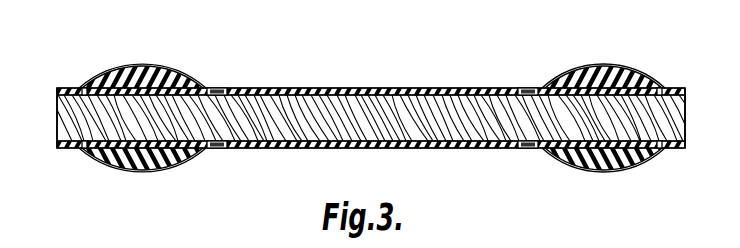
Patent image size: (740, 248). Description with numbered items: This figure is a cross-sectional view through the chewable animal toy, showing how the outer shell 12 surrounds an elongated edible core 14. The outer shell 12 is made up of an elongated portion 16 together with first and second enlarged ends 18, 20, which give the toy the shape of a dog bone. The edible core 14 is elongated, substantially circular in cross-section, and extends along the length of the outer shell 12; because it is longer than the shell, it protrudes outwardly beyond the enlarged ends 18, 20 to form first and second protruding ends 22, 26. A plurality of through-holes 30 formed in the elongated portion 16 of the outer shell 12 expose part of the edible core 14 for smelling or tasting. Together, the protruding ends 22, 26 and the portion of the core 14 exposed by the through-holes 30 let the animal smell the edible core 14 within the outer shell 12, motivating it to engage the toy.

The outer shell 12 is at (203, 153).
The edible core 14 is at (407, 98).
The elongated portion 16 is at (365, 88).
The first enlarged end 18 is at (148, 65).
The second enlarged end 20 is at (607, 65).
The first protruding end 22 is at (68, 97).
The second protruding end 26 is at (677, 97).
The through-holes 30 is at (217, 87).